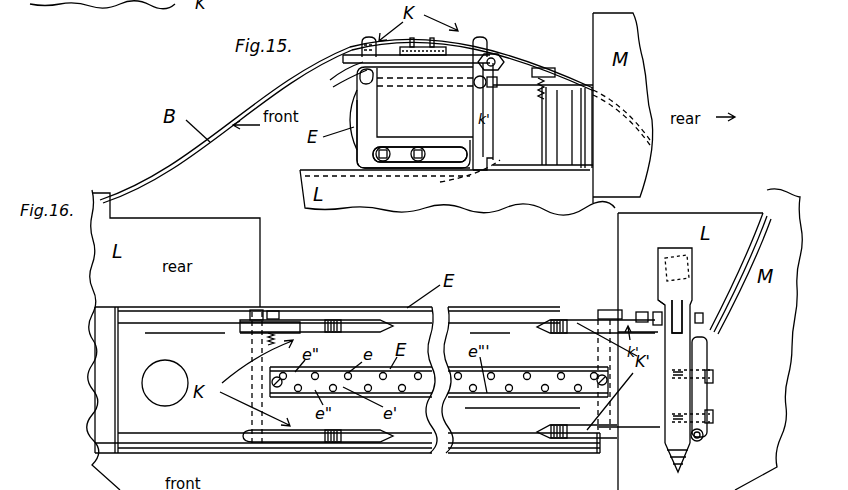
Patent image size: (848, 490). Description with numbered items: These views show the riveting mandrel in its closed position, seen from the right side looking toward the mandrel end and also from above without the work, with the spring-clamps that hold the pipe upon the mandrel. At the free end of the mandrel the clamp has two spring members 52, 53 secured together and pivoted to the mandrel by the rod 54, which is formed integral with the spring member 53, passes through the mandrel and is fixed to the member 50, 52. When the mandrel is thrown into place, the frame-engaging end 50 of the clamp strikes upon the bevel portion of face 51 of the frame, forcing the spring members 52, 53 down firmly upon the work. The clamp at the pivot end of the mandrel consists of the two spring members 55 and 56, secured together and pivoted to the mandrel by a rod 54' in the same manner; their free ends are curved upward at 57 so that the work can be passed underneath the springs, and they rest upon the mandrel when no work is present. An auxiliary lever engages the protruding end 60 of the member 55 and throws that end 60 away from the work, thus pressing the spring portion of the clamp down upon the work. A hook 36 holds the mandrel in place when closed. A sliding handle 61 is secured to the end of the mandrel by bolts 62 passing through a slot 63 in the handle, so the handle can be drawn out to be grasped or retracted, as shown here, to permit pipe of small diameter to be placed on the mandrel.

In FIG. 15, the hook 36 is at (348, 80).
In FIG. 16, the hook 36 is at (670, 437).
In FIG. 15, the frame-engaging end of the clamp 50 is at (485, 86).
In FIG. 16, the frame-engaging end of the clamp 50 is at (642, 322).
In FIG. 15, the bevel portion of face of the frame 51 is at (476, 85).
In FIG. 16, the bevel portion of face of the frame 51 is at (663, 300).
In FIG. 15, the spring member of the clamp 52 is at (489, 44).
In FIG. 16, the spring member of the clamp 52 is at (540, 329).
In FIG. 15, the spring member of the clamp 53 is at (363, 40).
In FIG. 16, the spring member of the clamp 53 is at (543, 439).
In FIG. 15, the rod 54 is at (529, 67).
In FIG. 16, the rod 54 is at (599, 349).
In FIG. 16, the rod 54' is at (272, 350).
In FIG. 16, the spring member 55 is at (290, 330).
In FIG. 16, the spring member 56 is at (303, 443).
In FIG. 16, the upwardly curved free ends 57 is at (337, 327).
In FIG. 16, the protruding end of the member 60 is at (243, 328).
In FIG. 15, the sliding handle 61 is at (363, 152).
In FIG. 16, the sliding handle 61 is at (698, 400).
In FIG. 15, the bolts 62 is at (417, 161).
In FIG. 16, the bolts 62 is at (711, 372).
In FIG. 15, the slot 63 is at (450, 153).